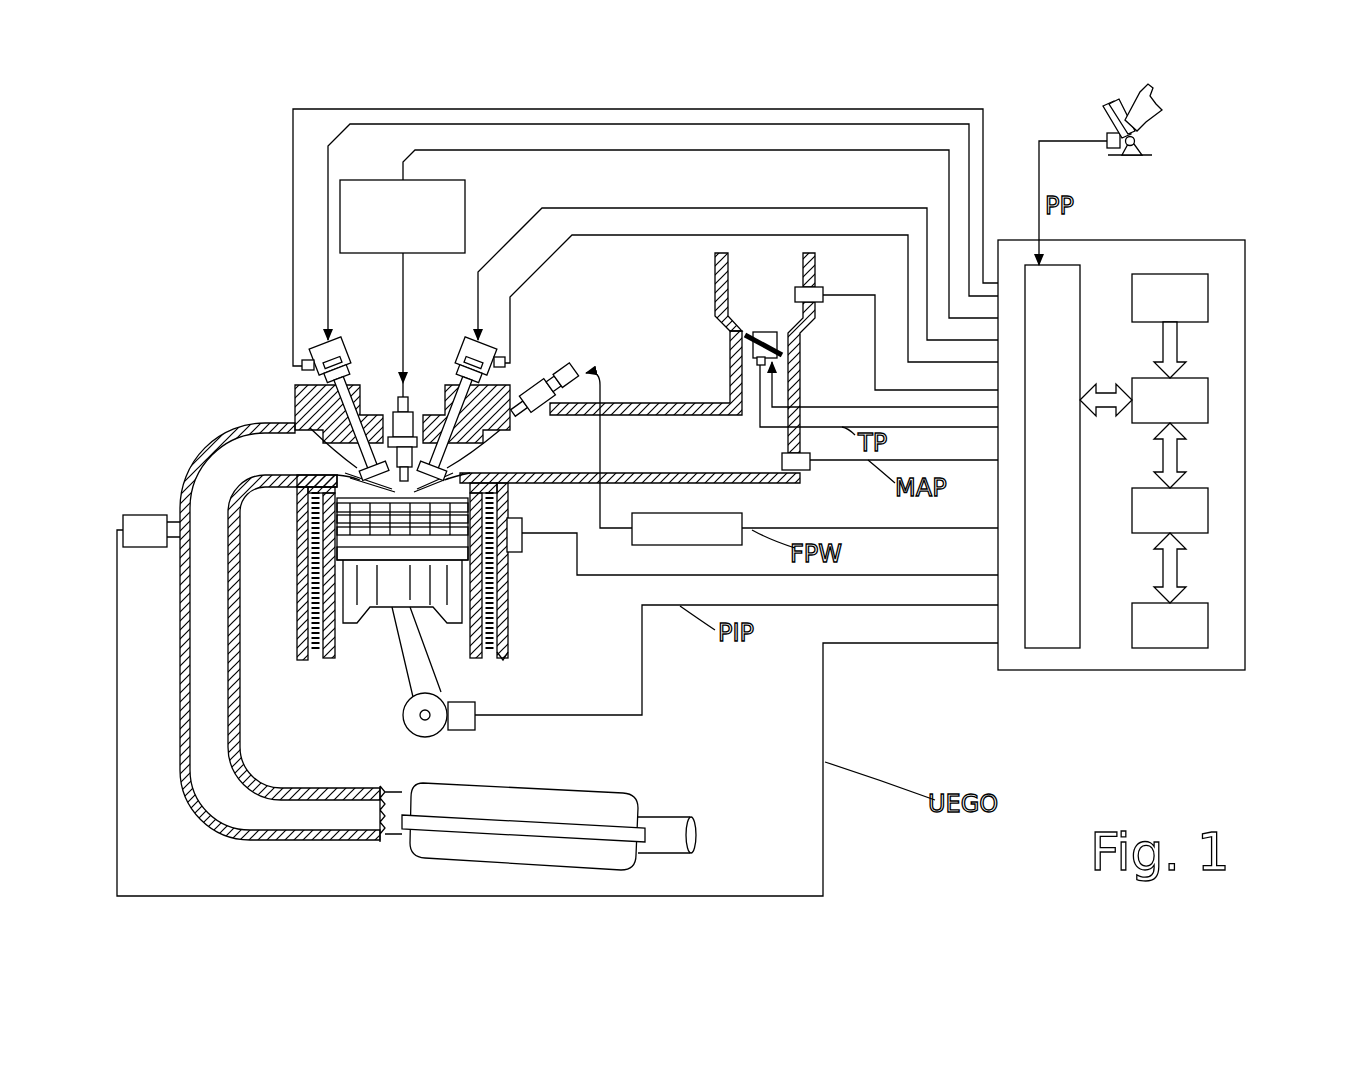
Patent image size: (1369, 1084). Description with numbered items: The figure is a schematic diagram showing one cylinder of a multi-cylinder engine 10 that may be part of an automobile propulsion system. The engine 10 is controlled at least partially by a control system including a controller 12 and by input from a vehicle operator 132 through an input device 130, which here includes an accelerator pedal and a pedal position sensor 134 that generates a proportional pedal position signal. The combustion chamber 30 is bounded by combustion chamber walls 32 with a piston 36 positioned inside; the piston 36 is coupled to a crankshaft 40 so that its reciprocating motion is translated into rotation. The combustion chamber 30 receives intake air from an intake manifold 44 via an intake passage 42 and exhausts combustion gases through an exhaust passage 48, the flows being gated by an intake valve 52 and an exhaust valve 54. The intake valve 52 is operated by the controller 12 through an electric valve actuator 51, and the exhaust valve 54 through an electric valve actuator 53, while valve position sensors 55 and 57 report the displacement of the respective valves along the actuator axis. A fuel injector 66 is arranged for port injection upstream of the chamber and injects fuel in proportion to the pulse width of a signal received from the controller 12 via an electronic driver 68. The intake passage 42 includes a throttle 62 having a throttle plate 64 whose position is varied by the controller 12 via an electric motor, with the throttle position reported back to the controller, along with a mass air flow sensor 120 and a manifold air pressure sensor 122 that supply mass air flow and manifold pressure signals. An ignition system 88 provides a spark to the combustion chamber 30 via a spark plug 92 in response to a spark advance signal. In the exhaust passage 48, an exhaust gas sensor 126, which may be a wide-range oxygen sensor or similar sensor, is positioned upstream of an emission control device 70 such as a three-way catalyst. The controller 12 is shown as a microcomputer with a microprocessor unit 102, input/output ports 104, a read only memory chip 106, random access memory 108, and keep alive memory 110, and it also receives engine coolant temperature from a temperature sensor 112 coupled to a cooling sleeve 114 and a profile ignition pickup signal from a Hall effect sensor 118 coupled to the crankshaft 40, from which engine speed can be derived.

The engine 10 is at (223, 332).
The controller 12 is at (1171, 437).
The combustion chamber 30 is at (402, 493).
The combustion chamber walls 32 is at (334, 652).
The piston 36 is at (405, 600).
The crankshaft 40 is at (412, 735).
The intake passage 42 is at (779, 308).
The intake manifold 44 is at (659, 458).
The exhaust passage 48 is at (272, 470).
The electric valve actuator 51 is at (466, 344).
The intake valve 52 is at (447, 470).
The electric valve actuator 53 is at (350, 346).
The exhaust valve 54 is at (355, 468).
The valve position sensor 55 is at (501, 357).
The valve position sensor 57 is at (307, 358).
The throttle 62 is at (785, 347).
The throttle plate 64 is at (750, 338).
The fuel injector 66 is at (548, 383).
The electronic driver 68 is at (650, 545).
The emission control device 70 is at (592, 790).
The ignition system 88 is at (348, 180).
The spark plug 92 is at (410, 400).
The microprocessor unit 102 is at (1210, 392).
The input/output ports 104 is at (1082, 272).
The read only memory chip 106 is at (1210, 290).
The random access memory 108 is at (1210, 505).
The keep alive memory 110 is at (1210, 618).
The temperature sensor 112 is at (524, 542).
The cooling sleeve 114 is at (512, 619).
The Hall effect sensor 118 is at (463, 733).
The mass air flow sensor 120 is at (818, 301).
The manifold air pressure sensor 122 is at (808, 469).
The exhaust gas sensor 126 is at (125, 518).
The input device 130 is at (1108, 112).
The vehicle operator 132 is at (1165, 118).
The pedal position sensor 134 is at (1107, 145).